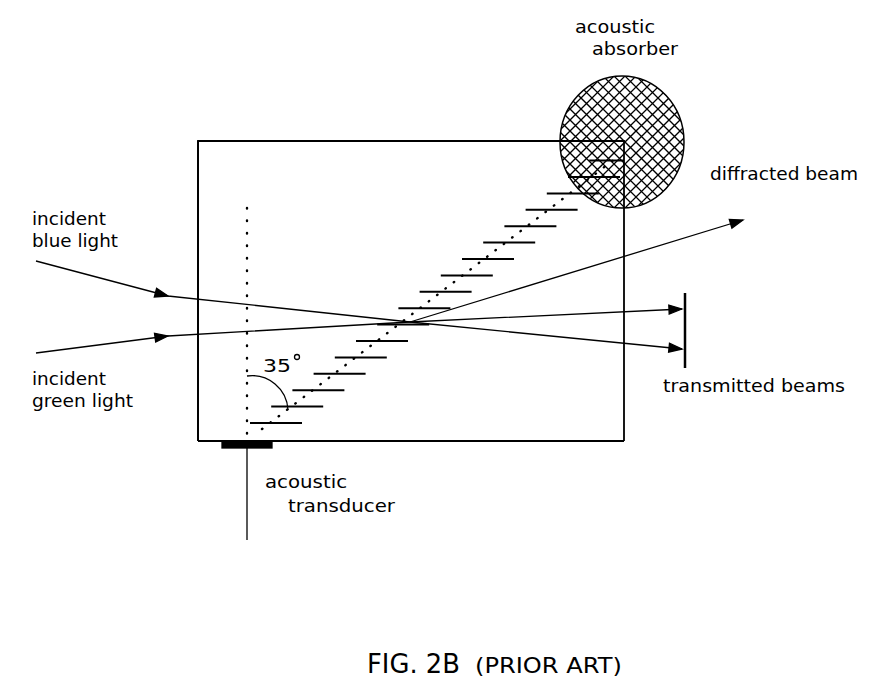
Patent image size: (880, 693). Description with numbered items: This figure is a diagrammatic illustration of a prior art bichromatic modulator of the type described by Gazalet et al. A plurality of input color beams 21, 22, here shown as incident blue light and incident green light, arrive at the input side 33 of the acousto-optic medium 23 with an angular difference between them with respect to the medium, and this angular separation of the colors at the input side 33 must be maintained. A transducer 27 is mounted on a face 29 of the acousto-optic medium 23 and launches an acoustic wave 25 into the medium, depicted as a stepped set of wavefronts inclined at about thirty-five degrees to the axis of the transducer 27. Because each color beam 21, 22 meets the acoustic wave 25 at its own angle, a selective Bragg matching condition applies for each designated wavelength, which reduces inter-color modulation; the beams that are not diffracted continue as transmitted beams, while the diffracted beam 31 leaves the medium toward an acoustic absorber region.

The input color beam 21 is at (72, 262).
The input color beam 22 is at (122, 341).
The acousto-optic medium 23 is at (321, 141).
The acoustic wave 25 is at (466, 272).
The transducer 27 is at (232, 449).
The face 29 is at (475, 442).
The diffracted beam 31 is at (686, 236).
The input side 33 is at (198, 158).